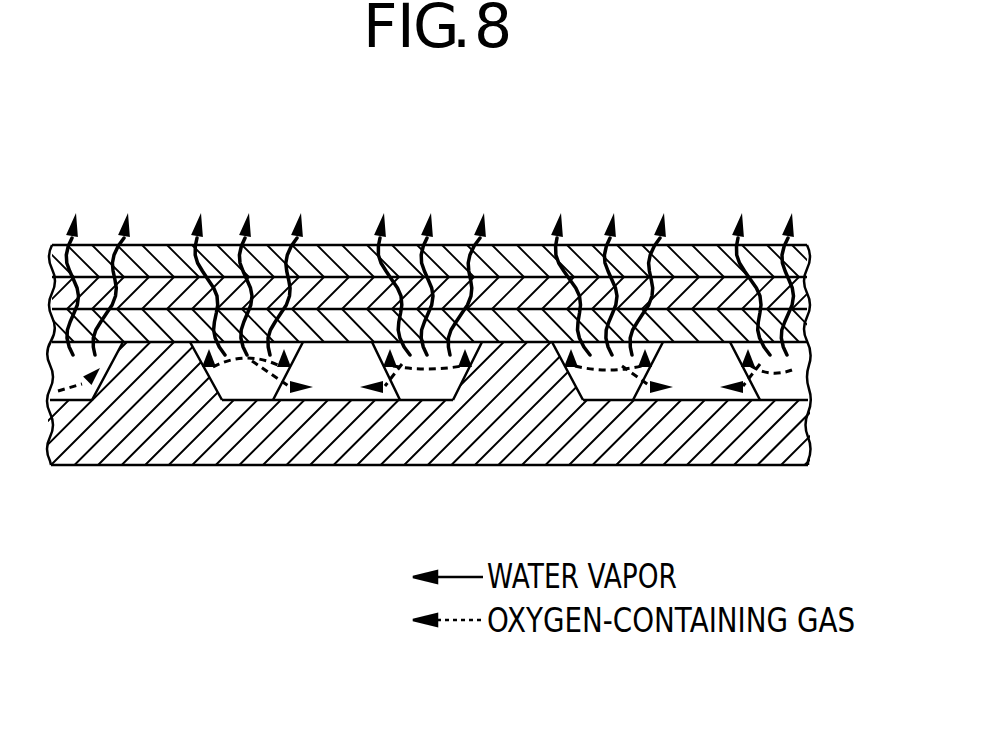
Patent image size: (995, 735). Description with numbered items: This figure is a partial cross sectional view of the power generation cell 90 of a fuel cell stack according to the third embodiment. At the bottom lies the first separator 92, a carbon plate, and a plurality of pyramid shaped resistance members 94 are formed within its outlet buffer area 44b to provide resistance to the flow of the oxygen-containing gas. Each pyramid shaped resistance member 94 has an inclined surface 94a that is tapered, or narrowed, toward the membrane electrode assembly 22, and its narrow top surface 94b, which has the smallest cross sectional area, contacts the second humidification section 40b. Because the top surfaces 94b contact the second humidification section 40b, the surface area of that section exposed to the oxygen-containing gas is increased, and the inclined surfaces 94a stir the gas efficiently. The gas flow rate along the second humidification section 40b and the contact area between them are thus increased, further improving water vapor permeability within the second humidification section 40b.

The power generation cell 90 is at (695, 127).
The membrane electrode assembly 22 is at (161, 239).
The second humidification section 40b is at (316, 279).
The top surface 94b is at (512, 345).
The pyramid shaped resistance member 94 is at (565, 357).
The inclined surface 94a is at (575, 377).
The outlet buffer area 44b is at (245, 380).
The first separator 92 is at (182, 468).